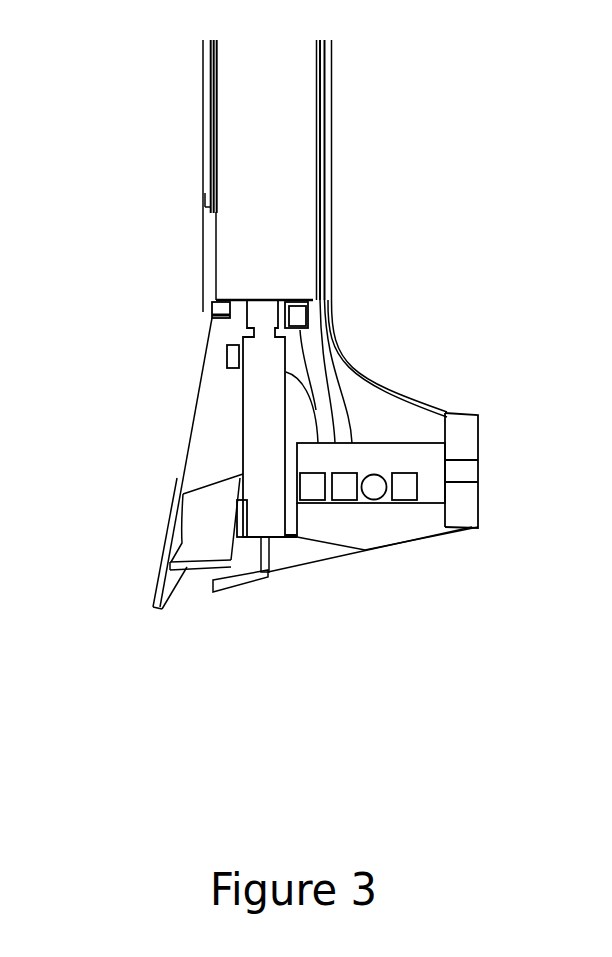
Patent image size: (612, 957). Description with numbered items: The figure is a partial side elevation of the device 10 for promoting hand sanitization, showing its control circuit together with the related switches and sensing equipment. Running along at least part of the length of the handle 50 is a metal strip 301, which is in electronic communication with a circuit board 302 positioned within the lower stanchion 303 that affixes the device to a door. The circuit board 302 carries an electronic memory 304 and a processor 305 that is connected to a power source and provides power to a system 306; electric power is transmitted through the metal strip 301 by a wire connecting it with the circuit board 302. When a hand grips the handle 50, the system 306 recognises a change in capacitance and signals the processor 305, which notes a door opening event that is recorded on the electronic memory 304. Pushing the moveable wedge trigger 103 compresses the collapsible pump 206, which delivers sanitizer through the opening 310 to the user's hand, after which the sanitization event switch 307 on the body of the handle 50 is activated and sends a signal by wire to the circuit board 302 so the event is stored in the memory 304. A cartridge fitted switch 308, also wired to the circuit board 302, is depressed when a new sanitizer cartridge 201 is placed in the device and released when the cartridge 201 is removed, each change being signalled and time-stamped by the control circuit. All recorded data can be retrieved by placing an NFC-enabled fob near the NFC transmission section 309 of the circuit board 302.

The device 10 is at (117, 240).
The handle 50 is at (207, 53).
The moveable wedge trigger 103 is at (178, 481).
The sanitizer cartridge 201 is at (245, 180).
The collapsible pump 206 is at (263, 428).
The metal strip 301 is at (320, 207).
The circuit board 302 is at (397, 450).
The lower stanchion 303 is at (350, 373).
The electronic memory 304 is at (313, 500).
The processor 305 is at (347, 500).
The system 306 is at (378, 495).
The sanitization event switch 307 is at (232, 360).
The cartridge fitted switch 308 is at (303, 315).
The NFC transmission section 309 is at (417, 497).
The opening 310 is at (263, 575).